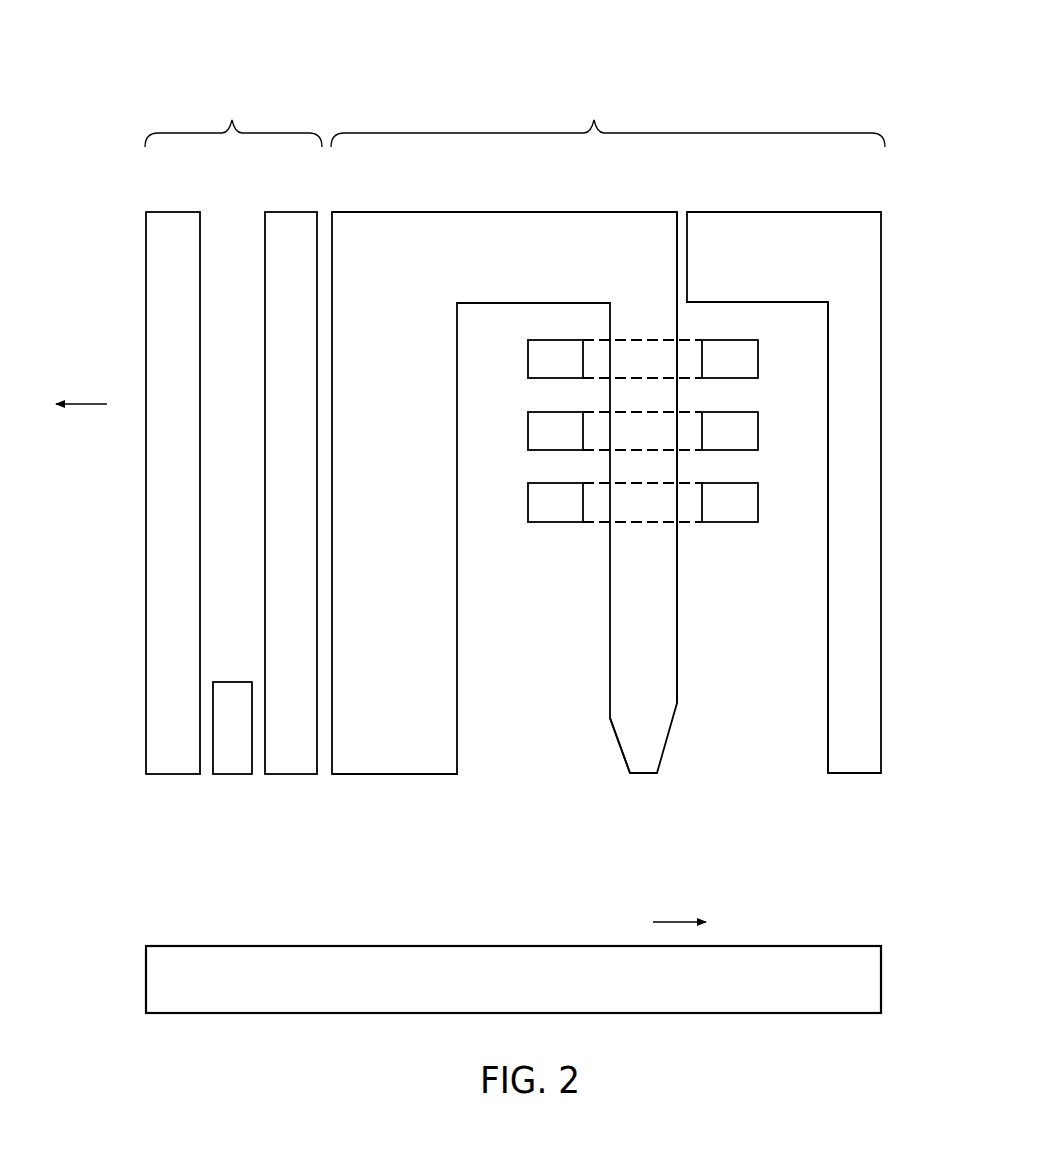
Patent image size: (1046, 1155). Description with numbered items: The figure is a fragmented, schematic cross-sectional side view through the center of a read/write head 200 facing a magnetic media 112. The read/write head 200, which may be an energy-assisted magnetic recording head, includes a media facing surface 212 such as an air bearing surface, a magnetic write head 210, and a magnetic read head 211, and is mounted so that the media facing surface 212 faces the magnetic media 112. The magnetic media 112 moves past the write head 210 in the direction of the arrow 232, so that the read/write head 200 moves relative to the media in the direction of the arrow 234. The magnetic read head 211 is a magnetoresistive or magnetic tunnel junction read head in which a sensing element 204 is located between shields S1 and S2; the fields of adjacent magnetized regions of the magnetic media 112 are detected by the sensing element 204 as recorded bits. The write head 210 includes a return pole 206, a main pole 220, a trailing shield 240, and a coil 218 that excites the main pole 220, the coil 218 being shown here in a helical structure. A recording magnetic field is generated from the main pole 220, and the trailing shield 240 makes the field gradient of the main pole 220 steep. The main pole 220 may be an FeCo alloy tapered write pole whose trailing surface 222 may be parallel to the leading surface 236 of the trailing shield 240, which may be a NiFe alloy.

The read/write head 200 is at (142, 39).
The magnetic read head 211 is at (233, 117).
The magnetic write head 210 is at (608, 117).
The MR shield S1 is at (170, 774).
The MR sensing element 204 is at (233, 774).
The MR shield S2 is at (295, 774).
The return pole 206 is at (395, 774).
The coil 218 is at (557, 522).
The main pole 220 is at (613, 733).
The trailing surface 222 is at (677, 690).
The media facing surface 212 is at (644, 773).
The leading surface 236 is at (828, 603).
The trailing shield 240 is at (881, 733).
The arrow 234 is at (90, 404).
The arrow 232 is at (670, 922).
The magnetic media 112 is at (881, 976).